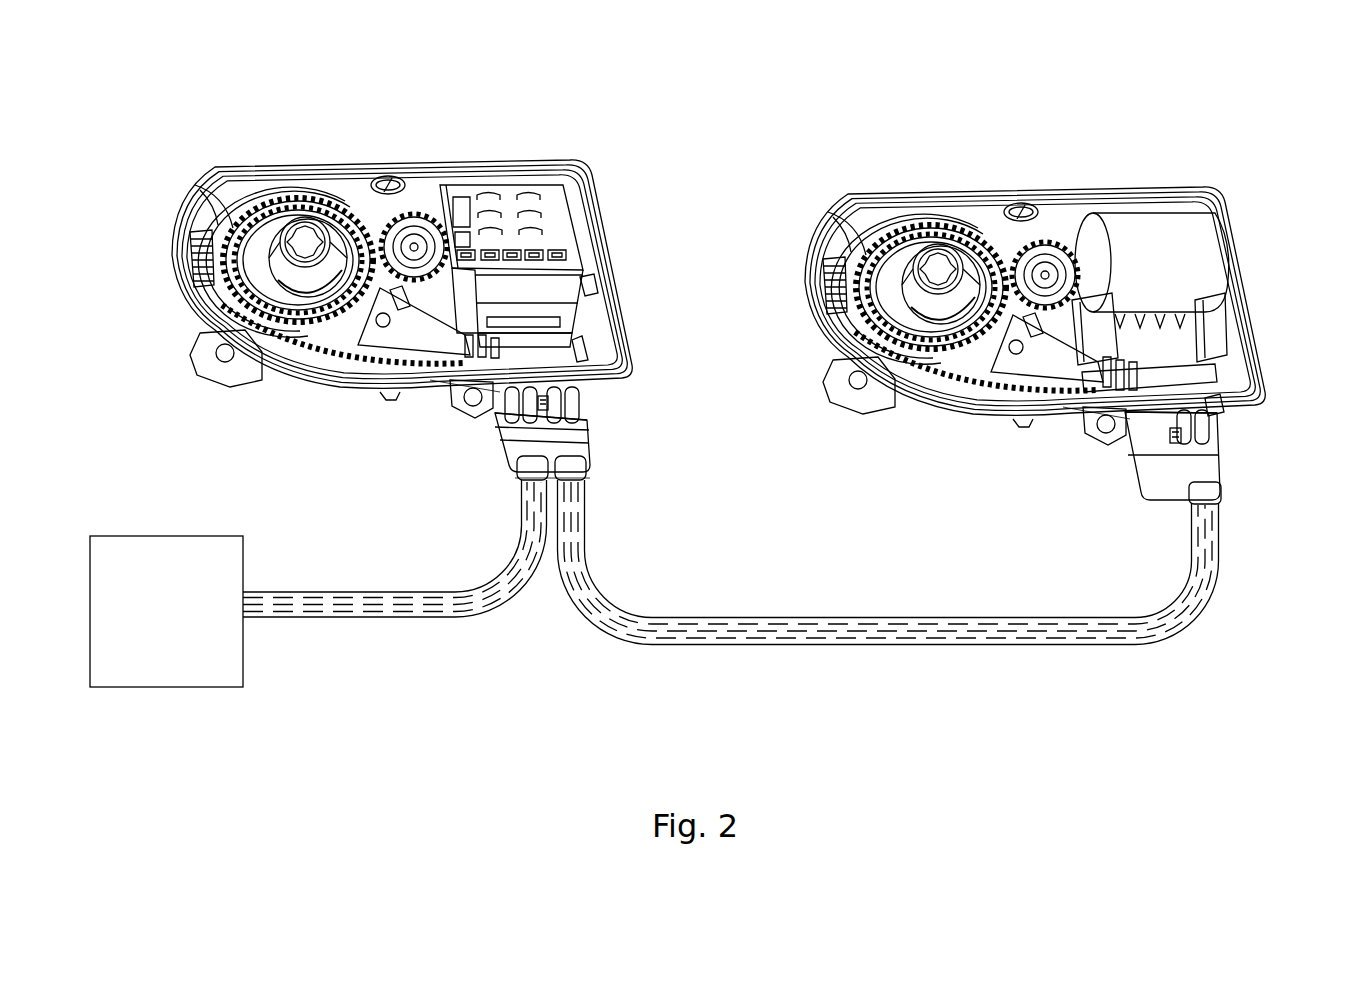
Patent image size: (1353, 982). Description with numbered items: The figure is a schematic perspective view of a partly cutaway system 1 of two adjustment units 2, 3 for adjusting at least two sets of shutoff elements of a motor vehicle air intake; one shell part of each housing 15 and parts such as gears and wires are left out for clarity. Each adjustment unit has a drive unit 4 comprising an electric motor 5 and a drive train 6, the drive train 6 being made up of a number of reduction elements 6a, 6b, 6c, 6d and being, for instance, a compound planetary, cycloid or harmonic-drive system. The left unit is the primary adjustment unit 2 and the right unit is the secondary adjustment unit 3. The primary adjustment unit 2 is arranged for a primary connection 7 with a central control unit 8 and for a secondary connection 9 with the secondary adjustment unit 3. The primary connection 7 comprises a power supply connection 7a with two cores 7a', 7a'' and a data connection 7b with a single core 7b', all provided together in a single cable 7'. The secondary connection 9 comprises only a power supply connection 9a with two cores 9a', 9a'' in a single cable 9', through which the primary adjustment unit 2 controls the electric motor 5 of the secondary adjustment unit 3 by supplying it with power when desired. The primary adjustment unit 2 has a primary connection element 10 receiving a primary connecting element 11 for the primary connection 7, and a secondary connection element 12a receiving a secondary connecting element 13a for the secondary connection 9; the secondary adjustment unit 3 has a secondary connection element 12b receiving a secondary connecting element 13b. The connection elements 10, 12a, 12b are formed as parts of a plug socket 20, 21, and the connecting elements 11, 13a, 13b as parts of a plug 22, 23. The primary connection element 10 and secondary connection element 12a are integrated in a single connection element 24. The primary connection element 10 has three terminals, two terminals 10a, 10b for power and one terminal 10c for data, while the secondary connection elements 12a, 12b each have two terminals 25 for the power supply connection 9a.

The system 1 is at (127, 117).
The primary adjustment unit 2 is at (521, 128).
The secondary adjustment unit 3 is at (1153, 152).
The drive unit 4 is at (352, 153).
The electric motor 5 is at (555, 273).
The drive train 6 is at (312, 153).
The reduction element 6a is at (428, 212).
The reduction element 6b is at (392, 216).
The reduction element 6c is at (270, 228).
The reduction element 6d is at (242, 208).
The primary connection 7 is at (395, 589).
The power supply connection 7a is at (388, 590).
The data connection 7b is at (392, 590).
The cable 7' is at (395, 589).
The core 7a' is at (385, 590).
The core 7a'' is at (388, 590).
The core 7b' is at (392, 590).
The central control unit 8 is at (145, 617).
The secondary connection 9 is at (888, 602).
The power supply connection 9a is at (888, 603).
The cable 9' is at (888, 602).
The core 9a' is at (888, 603).
The core 9a'' is at (888, 603).
The primary connection element 10 is at (505, 427).
The terminal 10a is at (505, 395).
The terminal 10b is at (523, 400).
The terminal 10c is at (547, 408).
The primary connecting element 11 is at (517, 455).
The secondary connection element 12a is at (589, 420).
The secondary connection element 12b is at (1135, 448).
The secondary connecting element 13a is at (590, 445).
The secondary connecting element 13b is at (1220, 470).
The housing 15 is at (193, 300).
The plug socket 20 is at (585, 357).
The plug socket 21 is at (1212, 412).
The plug 22 is at (522, 465).
The plug 23 is at (1143, 500).
The single connection element 24 is at (642, 326).
The terminals 25 is at (577, 410).